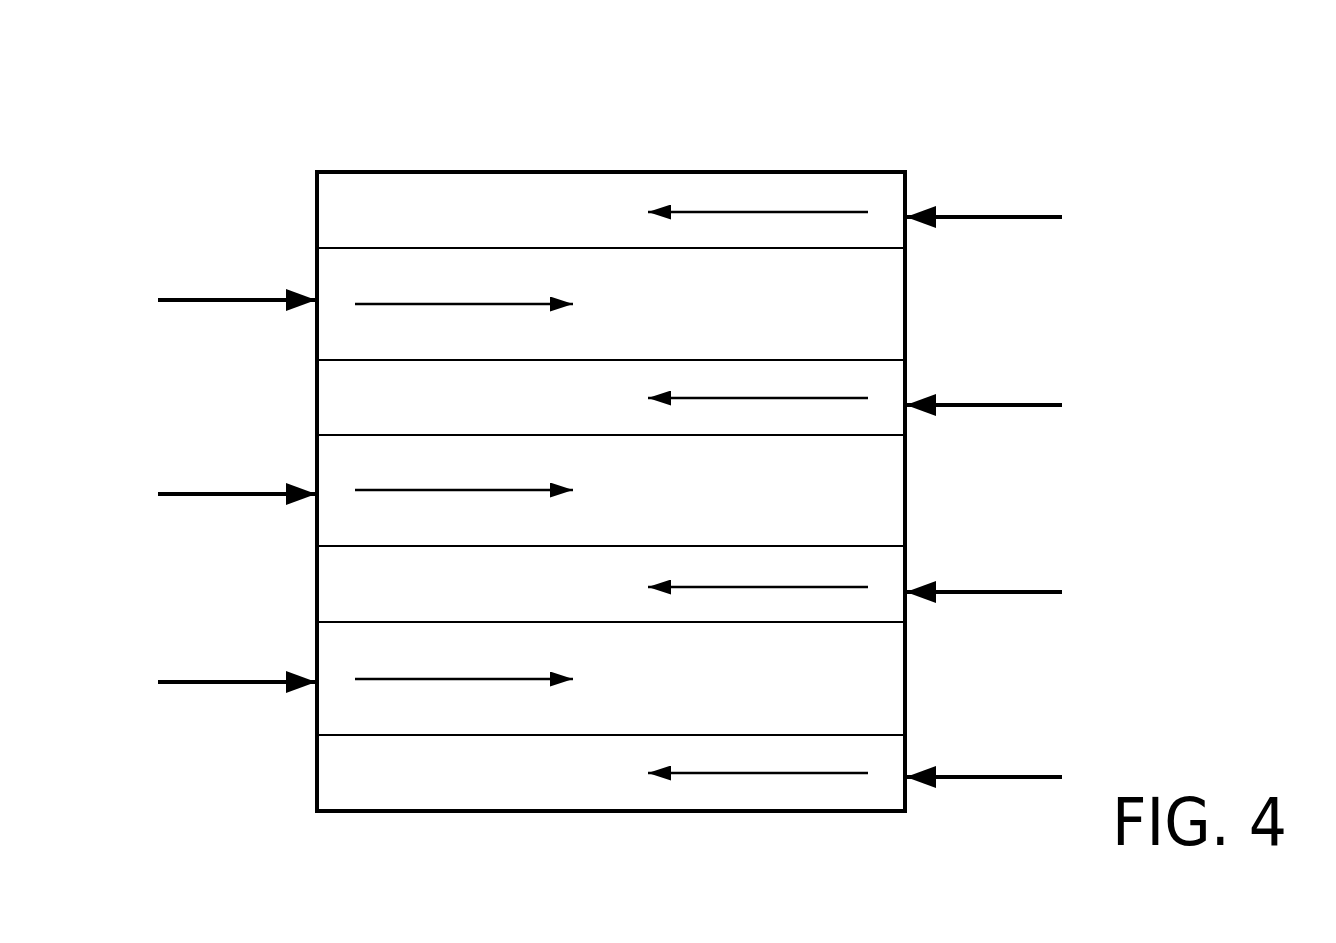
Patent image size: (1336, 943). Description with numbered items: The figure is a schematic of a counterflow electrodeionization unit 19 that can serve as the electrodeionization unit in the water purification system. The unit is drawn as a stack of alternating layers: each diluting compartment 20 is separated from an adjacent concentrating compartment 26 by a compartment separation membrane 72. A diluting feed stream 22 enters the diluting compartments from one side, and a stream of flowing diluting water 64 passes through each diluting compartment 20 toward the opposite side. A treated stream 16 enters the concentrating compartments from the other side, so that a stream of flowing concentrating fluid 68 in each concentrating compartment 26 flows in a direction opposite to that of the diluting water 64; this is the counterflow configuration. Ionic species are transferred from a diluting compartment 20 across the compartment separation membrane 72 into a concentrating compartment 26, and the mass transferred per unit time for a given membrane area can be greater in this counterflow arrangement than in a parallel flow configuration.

The counterflow electrodeionization unit 19 is at (612, 120).
The treated stream 16 is at (990, 192).
The diluting feed stream 22 is at (198, 700).
The diluting compartment 20 is at (305, 332).
The concentrating compartment 26 is at (915, 237).
The compartment separation membrane 72 is at (472, 243).
The stream of flowing concentrating fluid 68 is at (772, 200).
The stream of flowing diluting water 64 is at (403, 698).